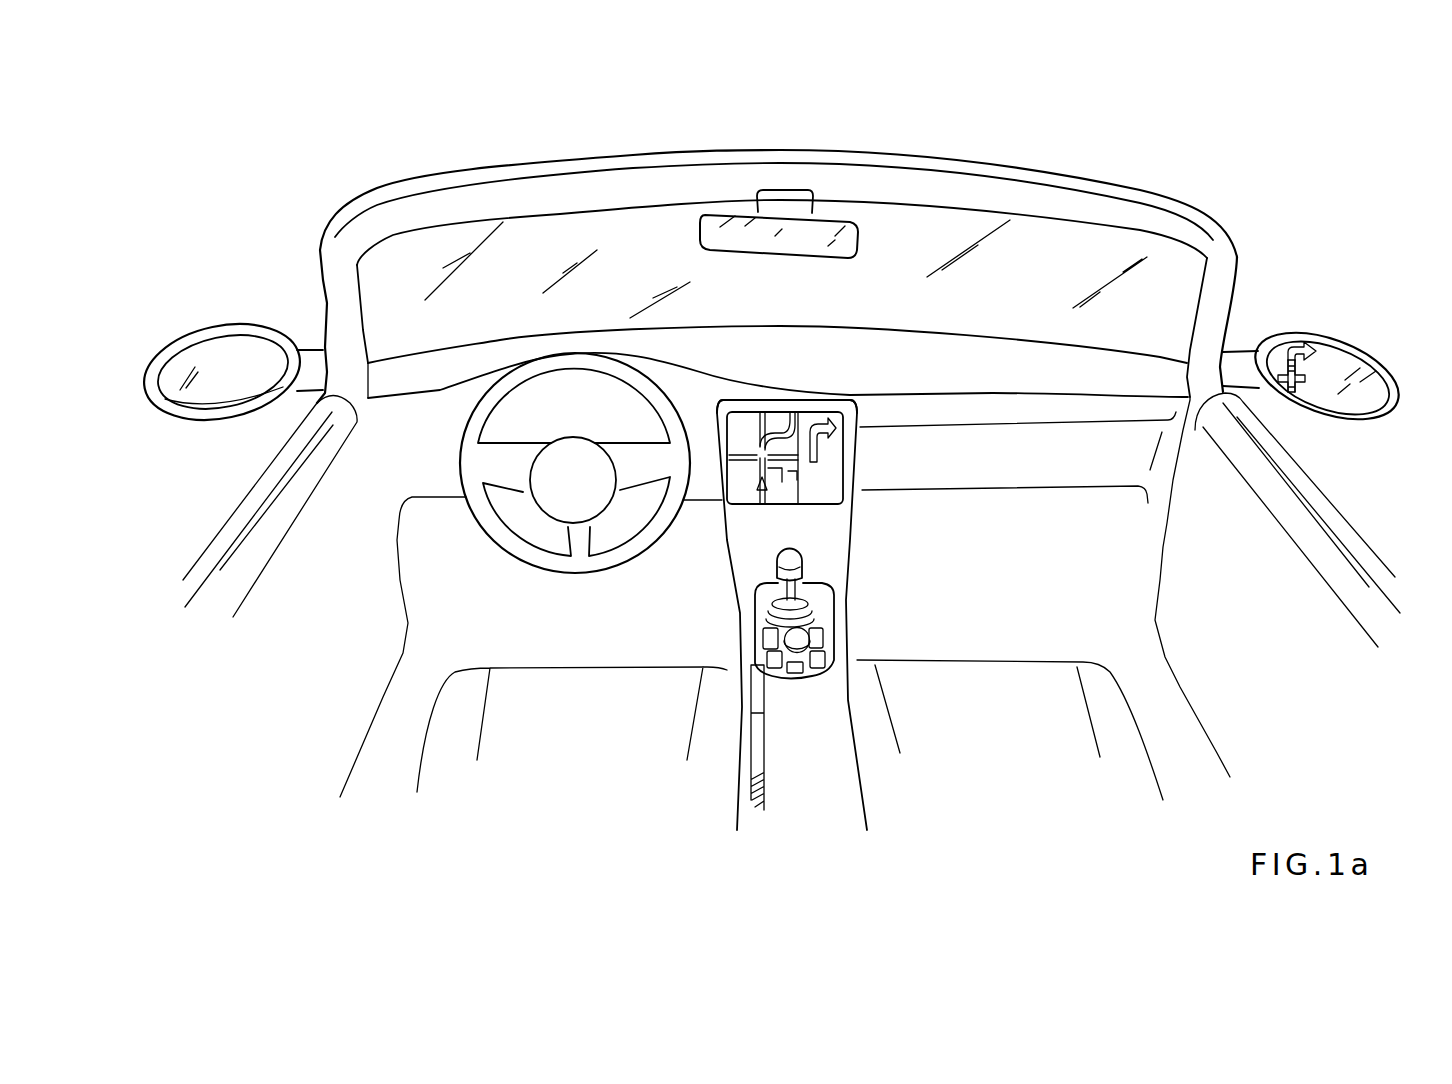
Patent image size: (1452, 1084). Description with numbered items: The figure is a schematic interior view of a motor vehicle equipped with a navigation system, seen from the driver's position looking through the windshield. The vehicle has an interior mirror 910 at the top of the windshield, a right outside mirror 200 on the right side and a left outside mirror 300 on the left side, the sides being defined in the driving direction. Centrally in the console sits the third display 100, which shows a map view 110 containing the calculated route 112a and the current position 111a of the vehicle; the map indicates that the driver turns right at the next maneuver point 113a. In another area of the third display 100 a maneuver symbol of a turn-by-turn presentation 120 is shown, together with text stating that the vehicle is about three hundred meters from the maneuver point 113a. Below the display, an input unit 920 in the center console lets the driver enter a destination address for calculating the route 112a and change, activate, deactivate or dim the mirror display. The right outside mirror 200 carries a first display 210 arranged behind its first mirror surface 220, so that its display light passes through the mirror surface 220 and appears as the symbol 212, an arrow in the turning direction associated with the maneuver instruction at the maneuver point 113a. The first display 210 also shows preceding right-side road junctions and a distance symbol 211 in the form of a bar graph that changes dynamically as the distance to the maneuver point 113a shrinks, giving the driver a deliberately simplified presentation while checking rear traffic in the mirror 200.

The third display 100 is at (768, 466).
The map view 110 is at (768, 466).
The current position 111a is at (749, 492).
The route 112a is at (750, 451).
The maneuver point 113a is at (758, 430).
The turn-by-turn presentation 120 is at (836, 450).
The right outside mirror 200 is at (1312, 395).
The first display 210 is at (1310, 392).
The distance symbol 211 is at (1285, 389).
The symbol 212 is at (1324, 360).
The first mirror surface 220 is at (1378, 399).
The left outside mirror 300 is at (211, 326).
The interior mirror 910 is at (830, 222).
The input unit 920 is at (802, 688).